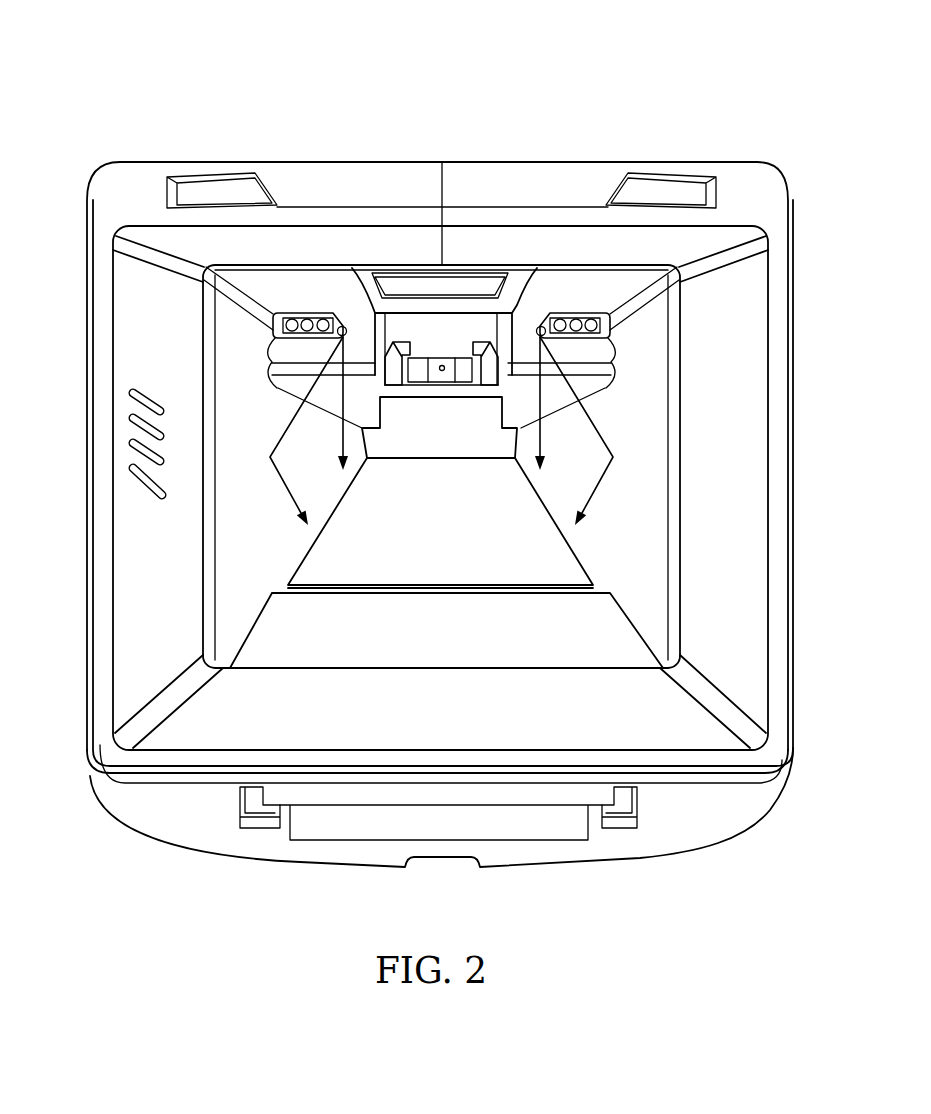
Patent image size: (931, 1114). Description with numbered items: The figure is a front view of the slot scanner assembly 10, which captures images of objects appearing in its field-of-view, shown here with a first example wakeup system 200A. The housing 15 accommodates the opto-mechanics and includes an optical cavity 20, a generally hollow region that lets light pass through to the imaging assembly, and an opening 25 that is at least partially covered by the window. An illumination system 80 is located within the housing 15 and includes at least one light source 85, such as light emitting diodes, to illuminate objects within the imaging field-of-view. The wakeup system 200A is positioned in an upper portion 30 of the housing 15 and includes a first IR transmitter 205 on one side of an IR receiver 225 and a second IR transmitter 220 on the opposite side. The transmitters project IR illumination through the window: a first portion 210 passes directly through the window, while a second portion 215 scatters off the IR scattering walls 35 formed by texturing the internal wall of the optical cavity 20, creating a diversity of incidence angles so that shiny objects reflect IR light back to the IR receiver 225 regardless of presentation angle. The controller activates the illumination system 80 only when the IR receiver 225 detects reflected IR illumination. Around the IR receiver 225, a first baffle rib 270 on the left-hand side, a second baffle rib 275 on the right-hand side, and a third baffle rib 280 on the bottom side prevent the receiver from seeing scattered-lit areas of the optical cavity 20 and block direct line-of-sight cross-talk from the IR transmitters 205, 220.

The slot scanner assembly 10 is at (136, 42).
The housing 15 is at (164, 140).
The optical cavity 20 is at (234, 418).
The opening 25 is at (215, 472).
The upper portion 30 is at (803, 163).
The IR scattering walls 35 is at (233, 553).
The illumination system 80 is at (293, 295).
The light source 85 is at (278, 323).
The first example wakeup system 200A is at (502, 316).
The first IR transmitter 205 is at (372, 318).
The first portion 210 is at (338, 447).
The second portion 215 is at (297, 510).
The second IR transmitter 220 is at (538, 328).
The IR receiver 225 is at (487, 340).
The first baffle rib 270 is at (395, 320).
The second baffle rib 275 is at (440, 357).
The third baffle rib 280 is at (460, 383).